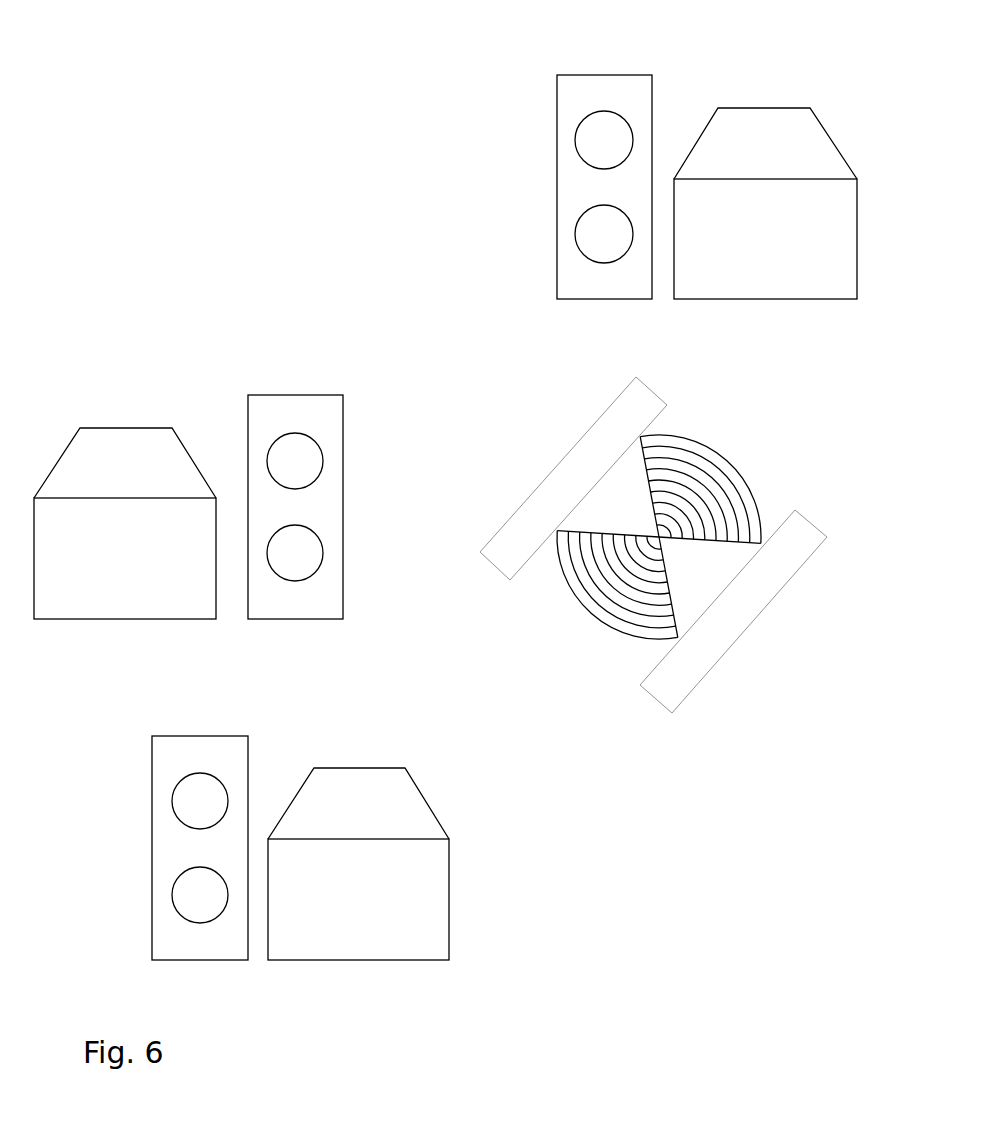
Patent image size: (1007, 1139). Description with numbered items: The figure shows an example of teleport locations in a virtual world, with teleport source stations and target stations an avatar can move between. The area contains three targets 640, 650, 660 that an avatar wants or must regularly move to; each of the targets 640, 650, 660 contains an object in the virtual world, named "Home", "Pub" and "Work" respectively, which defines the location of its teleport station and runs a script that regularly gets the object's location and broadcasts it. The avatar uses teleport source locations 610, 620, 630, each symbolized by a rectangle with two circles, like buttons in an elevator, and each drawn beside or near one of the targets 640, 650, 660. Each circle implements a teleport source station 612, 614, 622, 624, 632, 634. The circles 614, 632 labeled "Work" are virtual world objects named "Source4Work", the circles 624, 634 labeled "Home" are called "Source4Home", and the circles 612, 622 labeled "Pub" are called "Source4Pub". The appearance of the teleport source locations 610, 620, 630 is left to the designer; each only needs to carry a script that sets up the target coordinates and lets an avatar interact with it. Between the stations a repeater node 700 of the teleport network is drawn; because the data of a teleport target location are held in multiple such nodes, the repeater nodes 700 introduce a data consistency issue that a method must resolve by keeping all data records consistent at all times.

The teleport source location 610 is at (199, 821).
The teleport source station 612 is at (172, 802).
The teleport source station 614 is at (172, 897).
The teleport source location 620 is at (346, 476).
The teleport source station 622 is at (322, 457).
The teleport source station 624 is at (322, 540).
The teleport source location 630 is at (600, 156).
The teleport source station 632 is at (578, 132).
The teleport source station 634 is at (577, 245).
The target 640 is at (365, 767).
The target 650 is at (108, 427).
The target 660 is at (773, 107).
The repeater node 700 is at (738, 470).